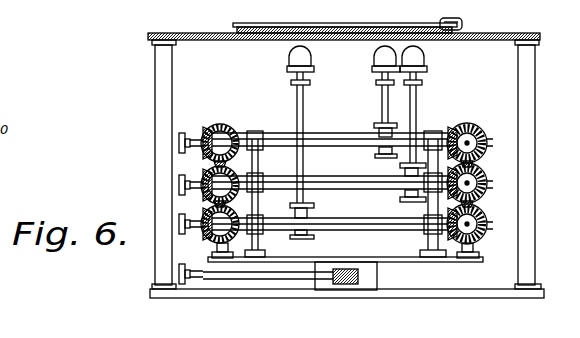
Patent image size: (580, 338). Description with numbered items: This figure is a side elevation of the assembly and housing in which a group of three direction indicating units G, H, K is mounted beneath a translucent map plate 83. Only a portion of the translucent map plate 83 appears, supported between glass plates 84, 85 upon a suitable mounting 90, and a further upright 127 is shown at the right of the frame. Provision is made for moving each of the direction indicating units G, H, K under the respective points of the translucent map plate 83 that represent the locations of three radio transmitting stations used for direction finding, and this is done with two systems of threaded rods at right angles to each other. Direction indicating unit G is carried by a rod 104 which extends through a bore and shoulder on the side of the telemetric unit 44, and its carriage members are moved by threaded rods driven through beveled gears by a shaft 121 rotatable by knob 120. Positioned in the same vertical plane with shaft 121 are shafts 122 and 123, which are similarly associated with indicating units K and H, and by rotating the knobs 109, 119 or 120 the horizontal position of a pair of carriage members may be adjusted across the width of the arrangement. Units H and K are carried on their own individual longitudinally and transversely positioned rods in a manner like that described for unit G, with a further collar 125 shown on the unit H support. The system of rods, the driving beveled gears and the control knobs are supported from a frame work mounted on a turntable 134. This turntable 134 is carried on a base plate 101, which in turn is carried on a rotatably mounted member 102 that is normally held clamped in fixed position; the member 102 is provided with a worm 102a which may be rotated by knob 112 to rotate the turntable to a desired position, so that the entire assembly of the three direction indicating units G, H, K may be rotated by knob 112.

The translucent map plate 83 is at (331, 22).
The glass plate 84 is at (344, 24).
The glass plate 85 is at (379, 18).
The mounting 90 is at (346, 154).
The right upright post 127 is at (533, 132).
The direction indicating unit K is at (292, 62).
The direction indicating unit G is at (373, 58).
The direction indicating unit H is at (425, 58).
The rod 104 is at (322, 131).
The shaft 121 is at (318, 150).
The shaft 123 is at (352, 183).
The shaft 122 is at (345, 230).
The turntable 134 is at (402, 257).
The telemetric unit 44 is at (376, 154).
The lower collar 125 is at (407, 202).
The knob 120 is at (179, 142).
The knob 119 is at (179, 183).
The knob 109 is at (179, 214).
The knob 112 is at (179, 272).
The base plate 101 is at (377, 266).
The rotatably mounted member 102 is at (360, 278).
The worm 102a is at (342, 284).